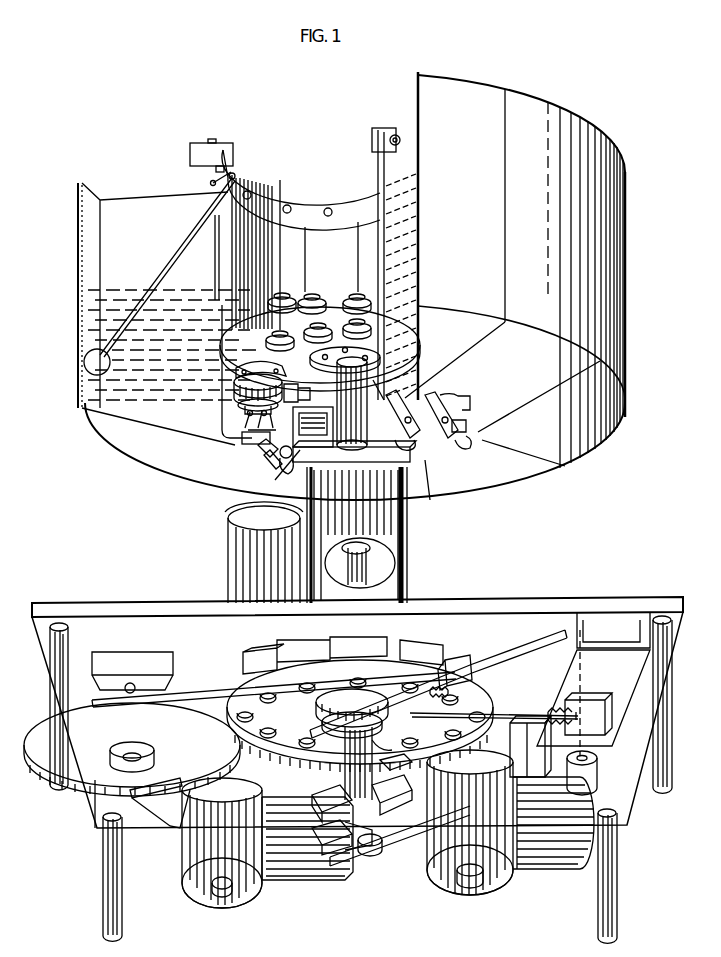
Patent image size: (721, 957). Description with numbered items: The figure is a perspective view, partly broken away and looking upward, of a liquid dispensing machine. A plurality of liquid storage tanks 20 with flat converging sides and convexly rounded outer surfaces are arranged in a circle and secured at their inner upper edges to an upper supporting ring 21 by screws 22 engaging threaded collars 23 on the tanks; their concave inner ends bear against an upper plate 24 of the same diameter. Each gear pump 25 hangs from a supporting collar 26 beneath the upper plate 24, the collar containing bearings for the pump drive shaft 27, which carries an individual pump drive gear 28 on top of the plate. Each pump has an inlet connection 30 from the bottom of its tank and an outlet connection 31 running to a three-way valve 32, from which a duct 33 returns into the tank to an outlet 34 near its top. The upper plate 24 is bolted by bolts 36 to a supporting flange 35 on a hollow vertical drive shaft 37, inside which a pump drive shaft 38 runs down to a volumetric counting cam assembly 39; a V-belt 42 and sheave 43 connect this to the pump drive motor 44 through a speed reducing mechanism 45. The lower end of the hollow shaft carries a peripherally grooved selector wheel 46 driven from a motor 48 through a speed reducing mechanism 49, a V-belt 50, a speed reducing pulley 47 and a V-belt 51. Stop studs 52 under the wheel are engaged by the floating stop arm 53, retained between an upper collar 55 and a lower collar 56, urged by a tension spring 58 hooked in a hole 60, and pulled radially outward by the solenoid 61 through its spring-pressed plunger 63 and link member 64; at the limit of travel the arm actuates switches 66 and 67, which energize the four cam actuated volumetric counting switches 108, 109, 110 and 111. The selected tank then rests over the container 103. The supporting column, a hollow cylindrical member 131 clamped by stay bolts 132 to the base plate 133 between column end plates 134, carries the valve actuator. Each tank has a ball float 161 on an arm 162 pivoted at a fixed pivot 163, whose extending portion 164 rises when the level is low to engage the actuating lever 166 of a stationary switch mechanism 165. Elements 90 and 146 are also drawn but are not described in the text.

The liquid storage tank 20 is at (472, 90).
The upper supporting ring 21 is at (318, 215).
The screw 22 is at (246, 196).
The threaded collar 23 is at (394, 135).
The upper plate 24 is at (225, 340).
The gear pump 25 is at (236, 389).
The supporting collar 26 is at (236, 366).
The pump drive shaft 27 is at (318, 358).
The pump drive gear 28 is at (270, 302).
The inlet connection 30 is at (286, 455).
The outlet connection 31 is at (250, 440).
The three-way valve 32 is at (262, 448).
The duct 33 is at (240, 422).
The outlet 34 is at (215, 212).
The supporting flange 35 is at (370, 372).
The bolt 36 is at (392, 365).
The hollow vertical drive shaft 37 is at (358, 542).
The pump drive shaft 38 is at (366, 570).
The volumetric counting cam assembly 39 is at (332, 880).
The V-belt 42 is at (422, 862).
The sheave 43 is at (494, 878).
The pump drive motor 44 is at (562, 868).
The speed reducing mechanism 45 is at (458, 790).
The selector wheel 46 is at (296, 740).
The speed reducing pulley 47 is at (92, 765).
The motor 48 is at (298, 882).
The speed reducing mechanism 49 is at (196, 882).
The V-belt 50 is at (158, 790).
The V-belt 51 is at (210, 680).
The stop stud 52 is at (311, 692).
The floating stop arm 53 is at (532, 660).
The upper collar 55 is at (318, 718).
The lower collar 56 is at (376, 745).
The tension spring 58 is at (465, 668).
The hole 60 is at (448, 706).
The solenoid 61 is at (604, 712).
The spring-pressed plunger 63 is at (548, 714).
The link member 64 is at (528, 728).
The switch 66 is at (520, 780).
The switch 67 is at (540, 778).
The blocks 90 is at (305, 642).
The container 103 is at (236, 562).
The volumetric counting switch 108 is at (318, 792).
The volumetric counting switch 109 is at (404, 786).
The volumetric counting switch 110 is at (314, 838).
The volumetric counting switch 111 is at (380, 852).
The hollow cylindrical member 131 is at (404, 531).
The stay bolt 132 is at (404, 497).
The base plate 133 is at (542, 602).
The column end plate 134 is at (374, 455).
The arm 146 is at (305, 472).
The ball float 161 is at (85, 370).
The arm 162 is at (158, 278).
The fixed pivot 163 is at (212, 184).
The extending portion 164 is at (232, 180).
The stationary switch mechanism 165 is at (205, 150).
The actuating lever 166 is at (215, 170).